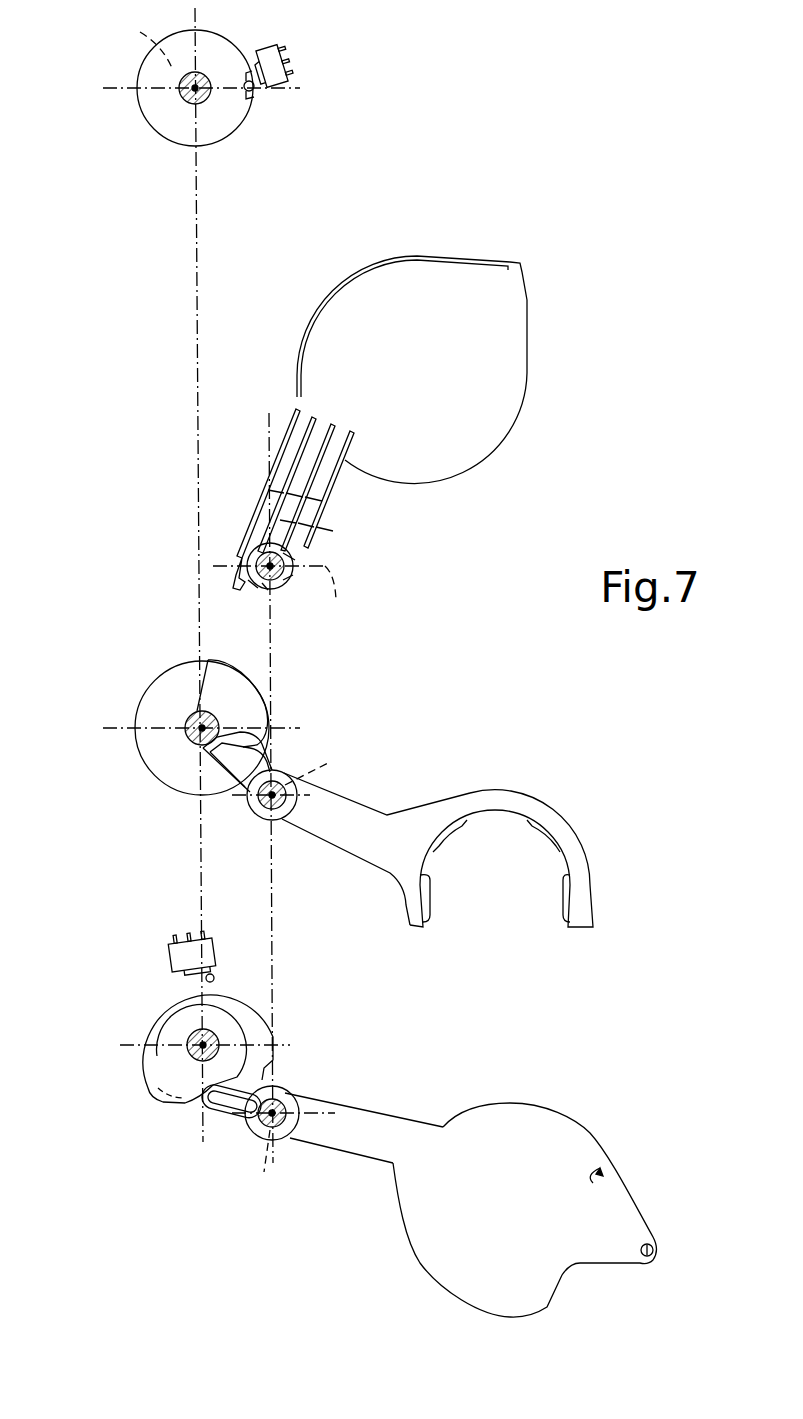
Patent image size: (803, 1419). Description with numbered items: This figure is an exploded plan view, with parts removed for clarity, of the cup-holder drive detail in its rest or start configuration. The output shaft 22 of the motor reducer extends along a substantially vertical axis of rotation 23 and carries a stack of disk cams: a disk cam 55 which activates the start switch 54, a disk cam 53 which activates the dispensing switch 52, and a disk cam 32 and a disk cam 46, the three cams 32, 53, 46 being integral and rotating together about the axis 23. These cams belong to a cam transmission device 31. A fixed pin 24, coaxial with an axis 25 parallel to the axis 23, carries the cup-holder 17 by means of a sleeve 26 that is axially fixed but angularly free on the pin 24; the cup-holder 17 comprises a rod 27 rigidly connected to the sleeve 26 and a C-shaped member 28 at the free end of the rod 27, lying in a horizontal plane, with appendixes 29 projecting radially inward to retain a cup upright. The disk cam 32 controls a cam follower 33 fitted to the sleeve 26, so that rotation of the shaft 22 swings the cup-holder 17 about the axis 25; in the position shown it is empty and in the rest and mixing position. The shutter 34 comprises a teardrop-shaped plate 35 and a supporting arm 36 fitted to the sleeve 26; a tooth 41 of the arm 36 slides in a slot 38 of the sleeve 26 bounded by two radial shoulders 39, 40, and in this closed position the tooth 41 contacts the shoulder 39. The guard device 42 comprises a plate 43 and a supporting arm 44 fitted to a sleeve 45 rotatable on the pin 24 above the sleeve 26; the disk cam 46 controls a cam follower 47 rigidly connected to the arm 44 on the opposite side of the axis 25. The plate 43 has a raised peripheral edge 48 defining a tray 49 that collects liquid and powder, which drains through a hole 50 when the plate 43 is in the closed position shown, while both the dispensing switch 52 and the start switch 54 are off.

The cup-holder 17 is at (449, 809).
The output shaft 22 is at (178, 103).
The axis of rotation 23 is at (135, 40).
The pin 24 is at (277, 582).
The axis 25 is at (303, 886).
The sleeve 26 is at (250, 560).
The rod 27 is at (337, 858).
The C-shaped member 28 is at (537, 810).
The appendixes 29 is at (548, 832).
The cam transmission device 31 is at (216, 710).
The disk cam 32 is at (252, 708).
The cam follower 33 is at (268, 748).
The shutter 34 is at (459, 370).
The teardrop-shaped plate 35 is at (483, 403).
The supporting arm 36 is at (330, 478).
The slot 38 is at (258, 590).
The radial shoulder 39 is at (285, 578).
The radial shoulder 40 is at (242, 588).
The tooth 41 is at (268, 590).
The guard device 42 is at (501, 1174).
The plate 43 is at (460, 1233).
The supporting arm 44 is at (367, 1138).
The sleeve 45 is at (285, 1130).
The disk cam 46 is at (185, 1080).
The cam follower 47 is at (213, 1100).
The raised peripheral edge 48 is at (588, 1133).
The tray 49 is at (608, 1182).
The hole 50 is at (655, 1243).
The dispensing switch 52 is at (205, 950).
The disk cam 53 is at (167, 1010).
The start switch 54 is at (273, 80).
The disk cam 55 is at (215, 128).